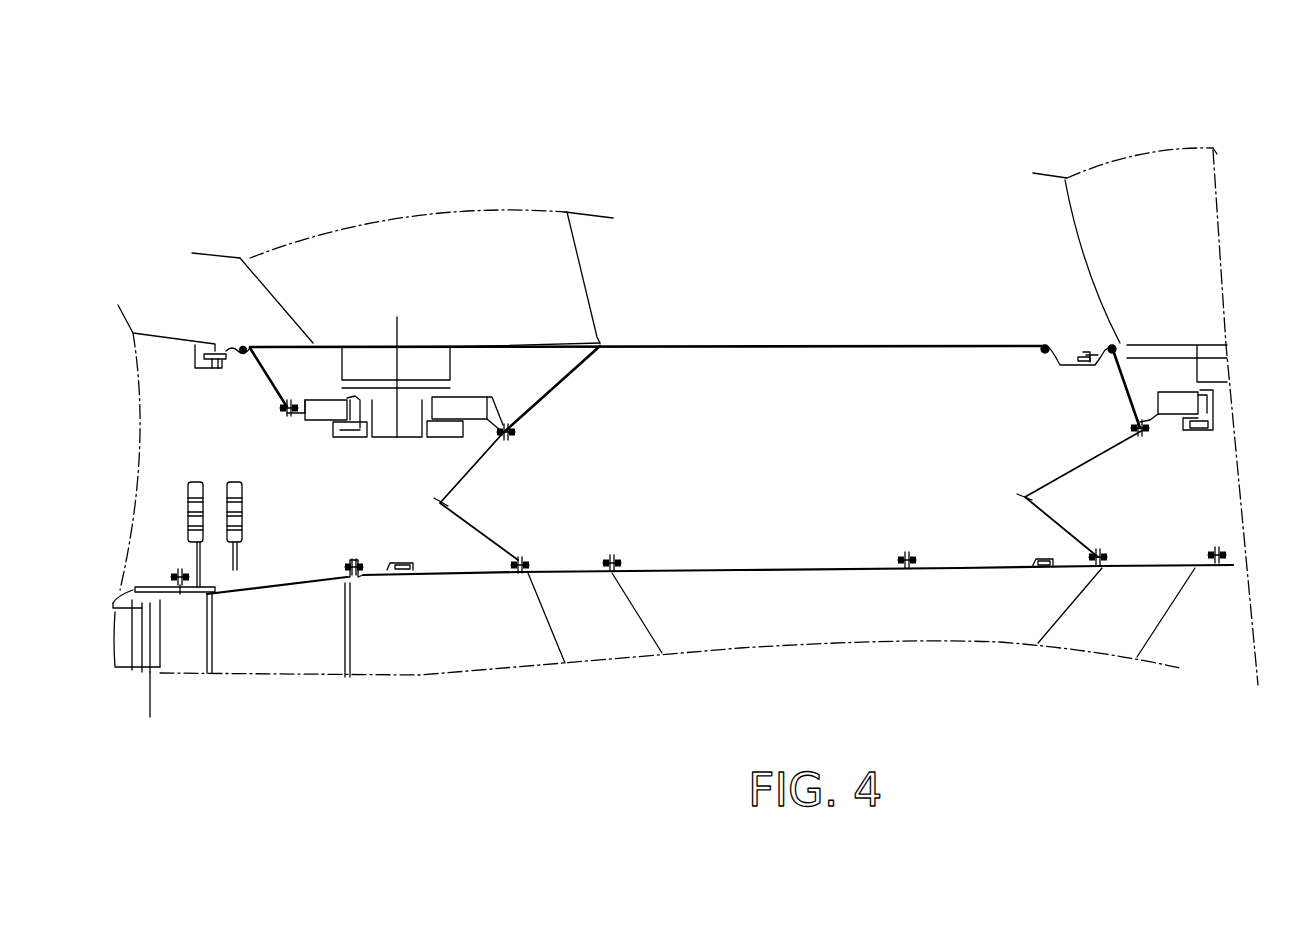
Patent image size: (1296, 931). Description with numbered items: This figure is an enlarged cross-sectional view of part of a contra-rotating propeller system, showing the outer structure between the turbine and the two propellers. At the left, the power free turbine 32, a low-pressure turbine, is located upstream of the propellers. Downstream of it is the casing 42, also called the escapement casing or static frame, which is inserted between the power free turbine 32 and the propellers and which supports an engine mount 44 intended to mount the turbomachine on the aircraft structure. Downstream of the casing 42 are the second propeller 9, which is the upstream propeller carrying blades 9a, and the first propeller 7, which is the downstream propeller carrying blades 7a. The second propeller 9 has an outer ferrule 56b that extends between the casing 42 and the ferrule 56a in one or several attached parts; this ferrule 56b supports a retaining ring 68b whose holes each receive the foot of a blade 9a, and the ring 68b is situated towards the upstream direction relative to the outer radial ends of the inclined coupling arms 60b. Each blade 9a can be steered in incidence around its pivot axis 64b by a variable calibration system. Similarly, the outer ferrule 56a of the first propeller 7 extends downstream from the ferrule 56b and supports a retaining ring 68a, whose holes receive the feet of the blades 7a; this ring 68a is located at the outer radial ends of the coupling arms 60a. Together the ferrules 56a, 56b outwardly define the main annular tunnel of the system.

The first propeller 7 is at (1232, 164).
The blades 7a is at (1087, 262).
The second propeller 9 is at (552, 184).
The blades 9a is at (573, 281).
The power free turbine 32 is at (148, 672).
The casing 42 is at (352, 662).
The engine mount 44 is at (240, 503).
The outer ferrule 56a is at (1157, 565).
The outer ferrule 56b is at (672, 570).
The coupling arms 60a is at (1085, 612).
The coupling arms 60b is at (633, 620).
The pivot axis 64b is at (398, 320).
The retaining ring 68a is at (1158, 405).
The retaining ring 68b is at (487, 402).